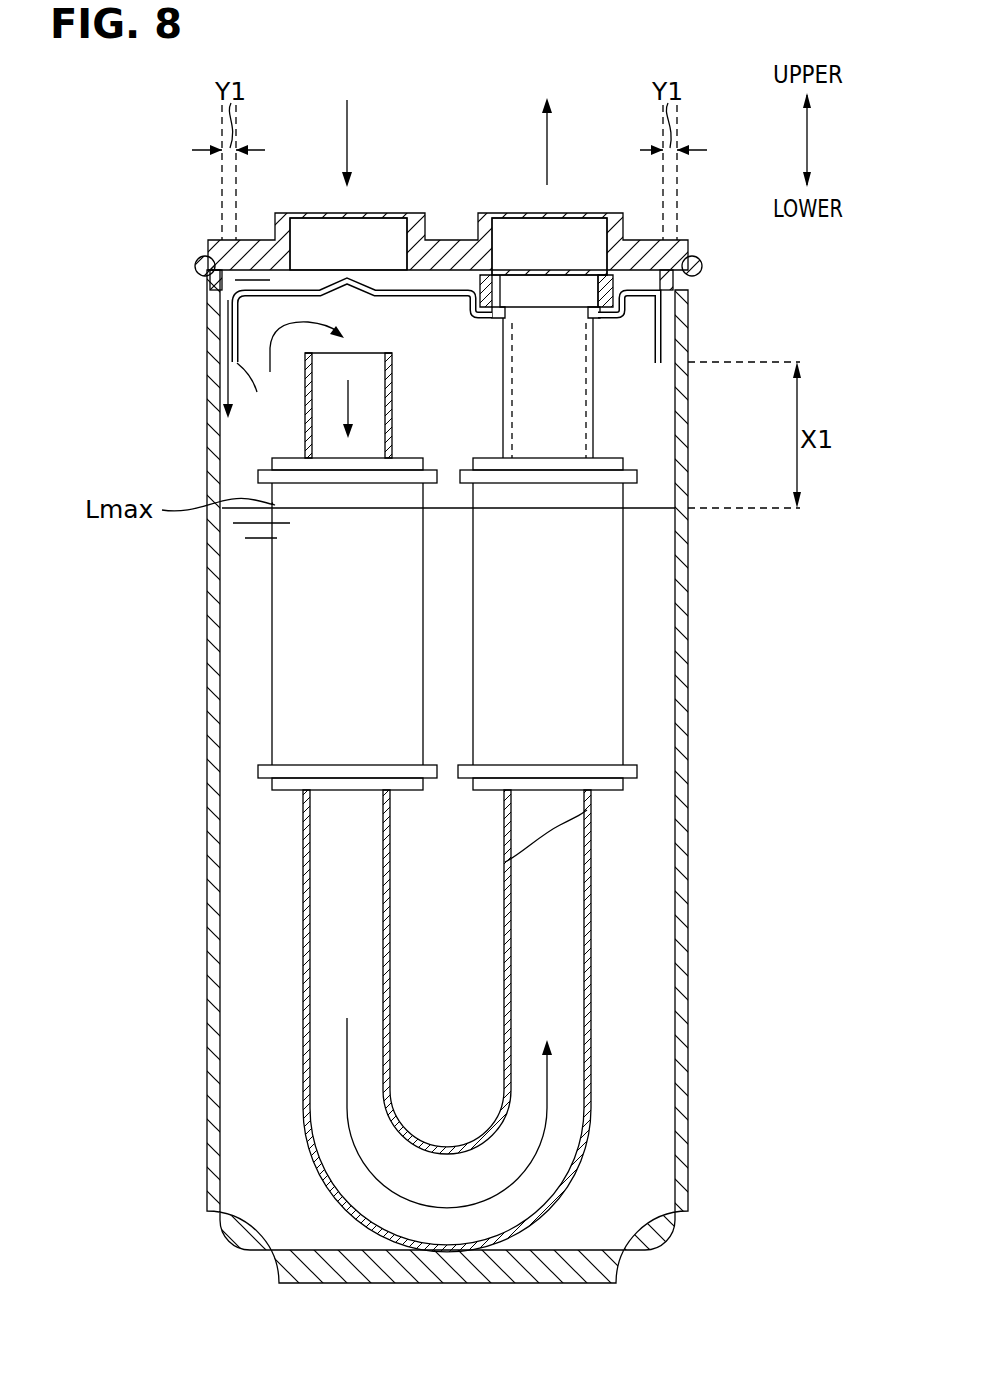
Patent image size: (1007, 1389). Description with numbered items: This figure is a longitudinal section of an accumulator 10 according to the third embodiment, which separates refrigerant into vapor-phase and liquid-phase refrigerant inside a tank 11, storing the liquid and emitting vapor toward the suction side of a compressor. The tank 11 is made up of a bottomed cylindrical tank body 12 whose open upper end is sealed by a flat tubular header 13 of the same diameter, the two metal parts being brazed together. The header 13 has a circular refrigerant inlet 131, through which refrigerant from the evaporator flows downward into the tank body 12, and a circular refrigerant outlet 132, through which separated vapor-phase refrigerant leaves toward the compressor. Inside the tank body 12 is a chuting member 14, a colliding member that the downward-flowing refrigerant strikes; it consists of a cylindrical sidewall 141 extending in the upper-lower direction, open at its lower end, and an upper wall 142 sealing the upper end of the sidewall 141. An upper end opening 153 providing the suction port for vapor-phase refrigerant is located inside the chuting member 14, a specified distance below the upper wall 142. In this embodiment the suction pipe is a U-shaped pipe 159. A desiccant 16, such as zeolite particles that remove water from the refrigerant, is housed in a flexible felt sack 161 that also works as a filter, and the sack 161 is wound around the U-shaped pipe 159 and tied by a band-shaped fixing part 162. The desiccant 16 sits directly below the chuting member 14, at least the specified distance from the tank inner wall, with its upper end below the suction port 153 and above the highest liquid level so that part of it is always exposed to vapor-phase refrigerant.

The accumulator 10 is at (177, 187).
The tank 11 is at (103, 243).
The tank body 12 is at (207, 320).
The header 13 is at (207, 254).
The refrigerant inlet 131 is at (372, 237).
The refrigerant outlet 132 is at (523, 237).
The chuting member 14 is at (103, 407).
The sidewall 141 is at (232, 418).
The upper wall 142 is at (298, 298).
The upper end opening 153 is at (380, 353).
The desiccant 16 is at (319, 668).
The sack 161 is at (272, 713).
The fixing part 162 is at (258, 768).
The U-shaped pipe 159 is at (590, 862).